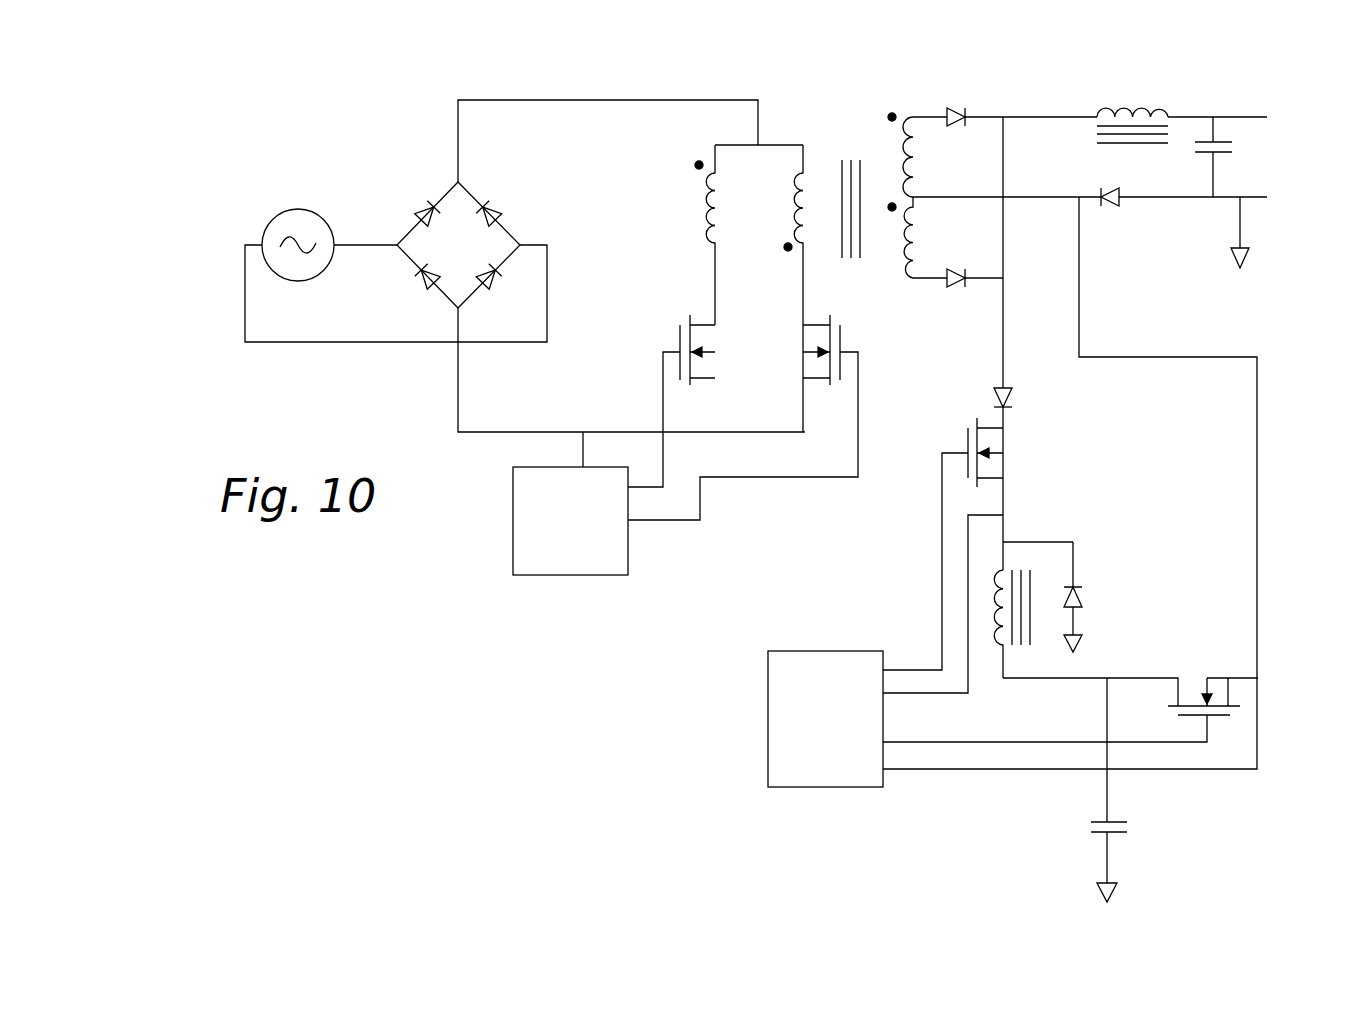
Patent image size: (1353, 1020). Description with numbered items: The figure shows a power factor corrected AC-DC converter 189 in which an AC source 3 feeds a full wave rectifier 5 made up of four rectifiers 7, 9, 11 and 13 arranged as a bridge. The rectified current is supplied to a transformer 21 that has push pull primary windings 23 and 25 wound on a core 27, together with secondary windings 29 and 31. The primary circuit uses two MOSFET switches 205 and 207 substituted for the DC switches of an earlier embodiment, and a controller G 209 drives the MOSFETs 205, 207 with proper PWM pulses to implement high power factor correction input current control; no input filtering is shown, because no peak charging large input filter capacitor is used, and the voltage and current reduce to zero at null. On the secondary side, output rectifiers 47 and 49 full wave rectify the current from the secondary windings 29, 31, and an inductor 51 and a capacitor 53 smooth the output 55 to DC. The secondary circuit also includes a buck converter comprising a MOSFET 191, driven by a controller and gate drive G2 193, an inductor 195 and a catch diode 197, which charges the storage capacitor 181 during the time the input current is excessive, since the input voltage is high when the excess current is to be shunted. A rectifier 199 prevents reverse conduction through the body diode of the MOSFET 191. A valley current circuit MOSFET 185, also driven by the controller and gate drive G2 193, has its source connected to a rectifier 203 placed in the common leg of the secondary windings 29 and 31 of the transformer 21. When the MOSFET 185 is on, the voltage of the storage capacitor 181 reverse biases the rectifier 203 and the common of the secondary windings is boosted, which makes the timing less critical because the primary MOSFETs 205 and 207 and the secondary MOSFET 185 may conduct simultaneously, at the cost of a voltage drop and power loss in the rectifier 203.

The power converter circuit 189 is at (323, 123).
The AC power source 3 is at (313, 195).
The full wave rectifier 5 is at (427, 185).
The rectifier 7 is at (495, 213).
The rectifier 9 is at (427, 297).
The rectifier 11 is at (505, 279).
The rectifier 13 is at (408, 217).
The transformer 21 is at (817, 113).
The primary winding 23 is at (700, 208).
The primary winding 25 is at (782, 222).
The transformer core 27 is at (832, 158).
The secondary winding 29 is at (897, 147).
The secondary winding 31 is at (896, 245).
The output rectifier 47 is at (953, 290).
The output rectifier 49 is at (952, 105).
The inductor 51 is at (1110, 102).
The capacitor 53 is at (1197, 165).
The output 55 is at (1316, 135).
The rectifier 203 is at (1110, 217).
The MOSFET switch 205 is at (703, 310).
The MOSFET switch 207 is at (788, 352).
The controller G 209 is at (507, 498).
The rectifier 199 is at (1015, 380).
The MOSFET 191 is at (1015, 485).
The inductor 195 is at (1022, 557).
The catch diode 197 is at (1130, 613).
The MOSFET 185 is at (1197, 673).
The storage capacitor 181 is at (1082, 818).
The controller and gate drive G2 193 is at (795, 643).